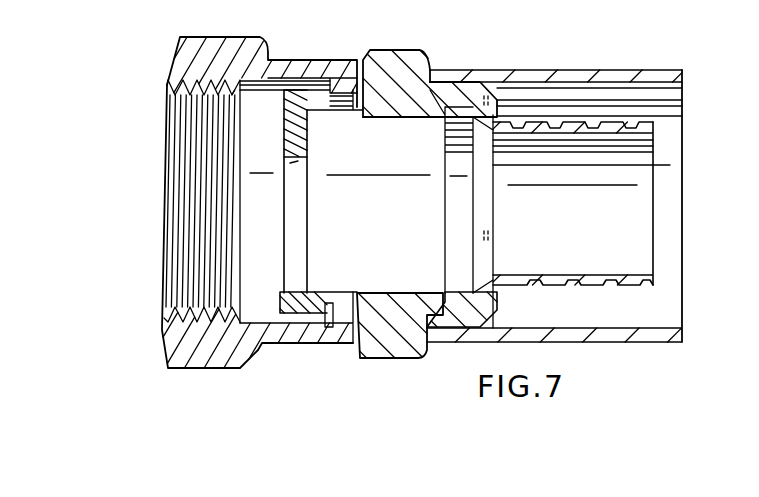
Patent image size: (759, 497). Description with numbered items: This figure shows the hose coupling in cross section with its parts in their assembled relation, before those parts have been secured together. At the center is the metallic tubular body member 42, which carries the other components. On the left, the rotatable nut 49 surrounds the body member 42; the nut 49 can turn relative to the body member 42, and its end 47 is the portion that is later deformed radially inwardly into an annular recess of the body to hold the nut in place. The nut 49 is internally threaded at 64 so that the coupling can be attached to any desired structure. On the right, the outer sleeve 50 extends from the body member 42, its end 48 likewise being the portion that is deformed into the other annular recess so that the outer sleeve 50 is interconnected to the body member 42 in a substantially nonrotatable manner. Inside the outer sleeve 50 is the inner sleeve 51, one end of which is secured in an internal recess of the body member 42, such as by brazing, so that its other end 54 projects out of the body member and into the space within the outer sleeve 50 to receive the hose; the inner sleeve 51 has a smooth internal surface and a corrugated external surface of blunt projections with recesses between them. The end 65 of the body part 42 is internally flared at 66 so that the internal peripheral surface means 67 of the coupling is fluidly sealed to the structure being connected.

The tubular body member 42 is at (411, 58).
The end of rotatable nut 47 is at (331, 58).
The end of outer sleeve 48 is at (448, 70).
The rotatable nut 49 is at (241, 43).
The outer sleeve 50 is at (626, 70).
The inner sleeve 51 is at (634, 275).
The other end of inner sleeve 54 is at (652, 283).
The internal threads 64 is at (177, 90).
The end of body part 65 is at (300, 313).
The internal flare 66 is at (288, 297).
The internal peripheral surface means 67 is at (371, 292).